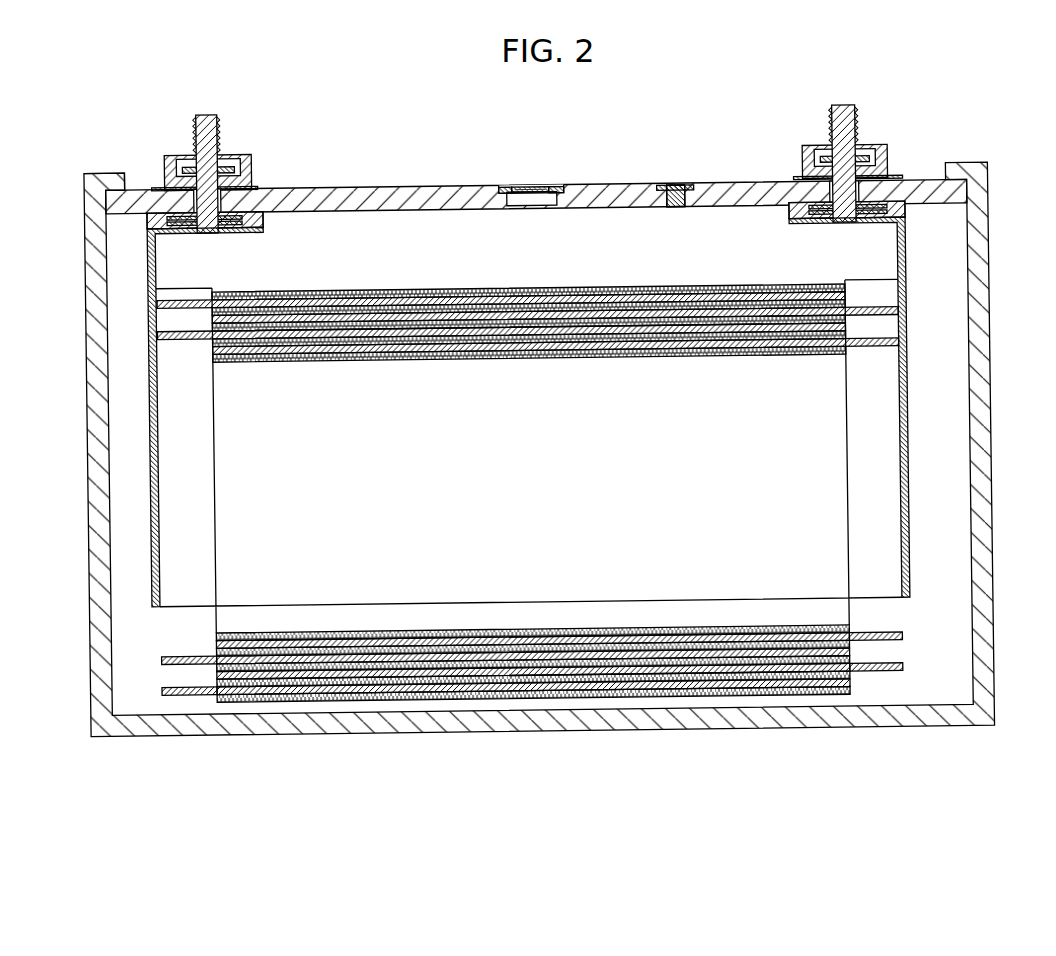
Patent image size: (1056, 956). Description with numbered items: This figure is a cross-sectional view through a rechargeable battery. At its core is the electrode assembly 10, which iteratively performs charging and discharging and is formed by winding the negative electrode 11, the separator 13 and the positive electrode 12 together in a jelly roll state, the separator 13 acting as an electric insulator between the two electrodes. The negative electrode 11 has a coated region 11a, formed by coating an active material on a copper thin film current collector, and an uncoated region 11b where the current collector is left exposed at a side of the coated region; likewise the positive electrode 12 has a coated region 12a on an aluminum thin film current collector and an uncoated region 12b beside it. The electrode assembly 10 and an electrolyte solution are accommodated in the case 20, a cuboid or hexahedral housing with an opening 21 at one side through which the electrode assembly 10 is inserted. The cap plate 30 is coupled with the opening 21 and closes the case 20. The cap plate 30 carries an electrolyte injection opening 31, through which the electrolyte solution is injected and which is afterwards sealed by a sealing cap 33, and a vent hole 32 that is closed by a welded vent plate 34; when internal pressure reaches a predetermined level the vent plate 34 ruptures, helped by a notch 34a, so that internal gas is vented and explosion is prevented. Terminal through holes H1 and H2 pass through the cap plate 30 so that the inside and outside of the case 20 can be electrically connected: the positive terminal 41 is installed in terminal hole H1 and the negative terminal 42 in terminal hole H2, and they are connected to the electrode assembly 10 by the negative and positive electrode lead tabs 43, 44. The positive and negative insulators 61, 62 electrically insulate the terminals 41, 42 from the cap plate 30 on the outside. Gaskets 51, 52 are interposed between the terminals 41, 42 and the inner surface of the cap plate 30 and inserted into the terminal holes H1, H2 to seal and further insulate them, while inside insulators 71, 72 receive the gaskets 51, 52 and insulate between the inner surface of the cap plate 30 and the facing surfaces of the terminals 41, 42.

The electrode assembly 10 is at (530, 548).
The negative electrode 11 is at (504, 555).
The coated region 11a is at (534, 714).
The uncoated region 11b is at (197, 718).
The positive electrode 12 is at (558, 560).
The coated region 12a is at (533, 705).
The uncoated region 12b is at (875, 701).
The separator 13 is at (517, 693).
The case 20 is at (570, 448).
The opening 21 is at (105, 162).
The cap plate 30 is at (536, 169).
The electrolyte injection opening 31 is at (660, 163).
The vent hole 32 is at (493, 173).
The sealing cap 33 is at (680, 168).
The vent plate 34 is at (541, 160).
The notch 34a is at (511, 159).
The positive terminal 41 is at (253, 166).
The negative terminal 42 is at (796, 154).
The negative electrode lead tab 43 is at (148, 417).
The positive electrode lead tab 44 is at (915, 407).
The gasket 51 is at (151, 253).
The gasket 52 is at (912, 234).
The positive insulator 61 is at (177, 141).
The negative insulator 62 is at (880, 143).
The inside insulator 71 is at (141, 231).
The inside insulator 72 is at (922, 216).
The terminal through hole H1 is at (241, 172).
The terminal through hole H2 is at (809, 168).